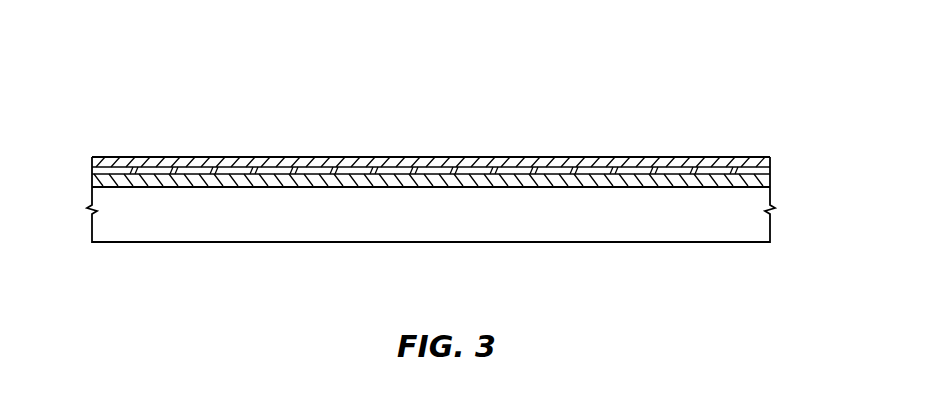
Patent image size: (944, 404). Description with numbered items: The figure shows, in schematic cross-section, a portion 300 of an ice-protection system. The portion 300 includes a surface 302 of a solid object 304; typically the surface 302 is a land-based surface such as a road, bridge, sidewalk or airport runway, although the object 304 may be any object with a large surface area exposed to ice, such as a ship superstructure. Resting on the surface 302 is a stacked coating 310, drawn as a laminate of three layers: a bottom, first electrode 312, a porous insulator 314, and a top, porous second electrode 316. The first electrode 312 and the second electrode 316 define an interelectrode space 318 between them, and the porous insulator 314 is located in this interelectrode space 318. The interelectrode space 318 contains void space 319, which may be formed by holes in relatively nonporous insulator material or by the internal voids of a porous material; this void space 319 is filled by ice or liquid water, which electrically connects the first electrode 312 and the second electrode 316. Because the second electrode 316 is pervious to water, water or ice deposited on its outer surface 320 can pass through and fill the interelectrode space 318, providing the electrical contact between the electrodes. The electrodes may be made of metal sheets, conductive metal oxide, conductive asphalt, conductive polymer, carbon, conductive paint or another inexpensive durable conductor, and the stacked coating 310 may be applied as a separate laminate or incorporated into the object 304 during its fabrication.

The portion of a system 300 is at (424, 108).
The surface 302 is at (395, 187).
The solid object 304 is at (548, 228).
The stacked coating 310 is at (87, 157).
The first electrode 312 is at (768, 180).
The porous insulator 314 is at (770, 171).
The second electrode 316 is at (772, 157).
The interelectrode space 318 is at (535, 166).
The void space 319 is at (612, 166).
The outer surface 320 is at (722, 157).